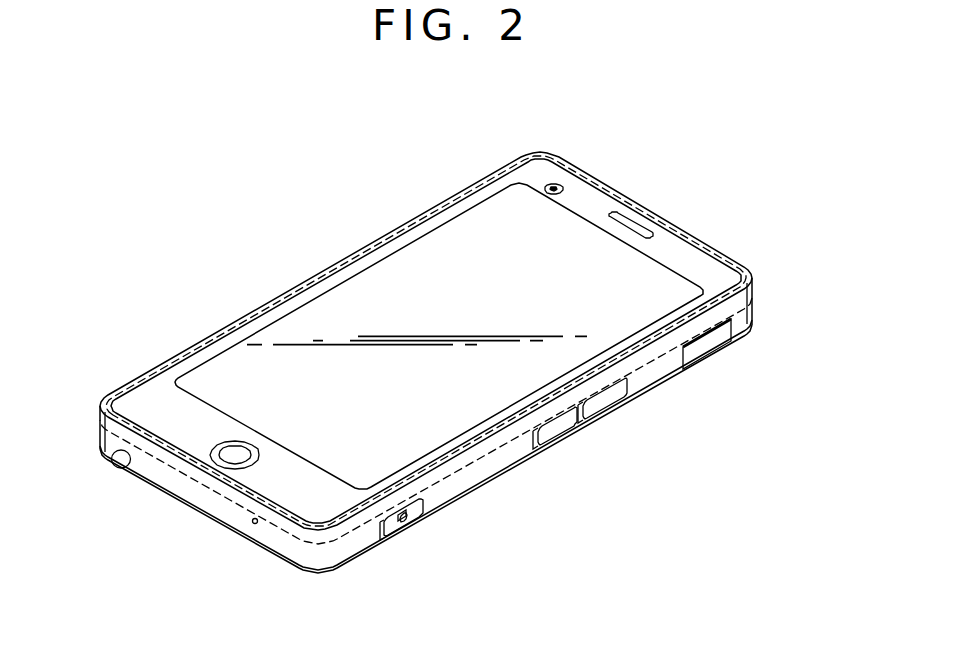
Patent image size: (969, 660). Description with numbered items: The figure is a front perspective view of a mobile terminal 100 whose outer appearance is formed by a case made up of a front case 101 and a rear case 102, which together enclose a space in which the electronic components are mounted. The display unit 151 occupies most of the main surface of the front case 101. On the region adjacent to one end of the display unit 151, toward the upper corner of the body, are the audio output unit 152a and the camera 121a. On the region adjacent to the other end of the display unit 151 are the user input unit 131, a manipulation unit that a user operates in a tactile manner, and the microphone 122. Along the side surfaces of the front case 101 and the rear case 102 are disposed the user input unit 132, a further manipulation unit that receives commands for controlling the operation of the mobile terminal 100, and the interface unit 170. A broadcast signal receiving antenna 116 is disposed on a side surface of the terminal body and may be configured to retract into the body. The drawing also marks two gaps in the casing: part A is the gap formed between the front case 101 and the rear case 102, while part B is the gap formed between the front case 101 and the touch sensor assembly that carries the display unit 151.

The mobile terminal 100 is at (380, 206).
The front case 101 is at (748, 302).
The rear case 102 is at (748, 321).
The display unit 151 is at (362, 277).
The user input unit 131 is at (230, 453).
The camera 121a is at (561, 188).
The audio output unit 152a is at (635, 227).
The user input unit 132 is at (560, 430).
The interface unit 170 is at (713, 350).
The broadcast signal receiving antenna 116 is at (117, 461).
The microphone 122 is at (253, 523).
The part A is at (430, 492).
The part B is at (478, 450).